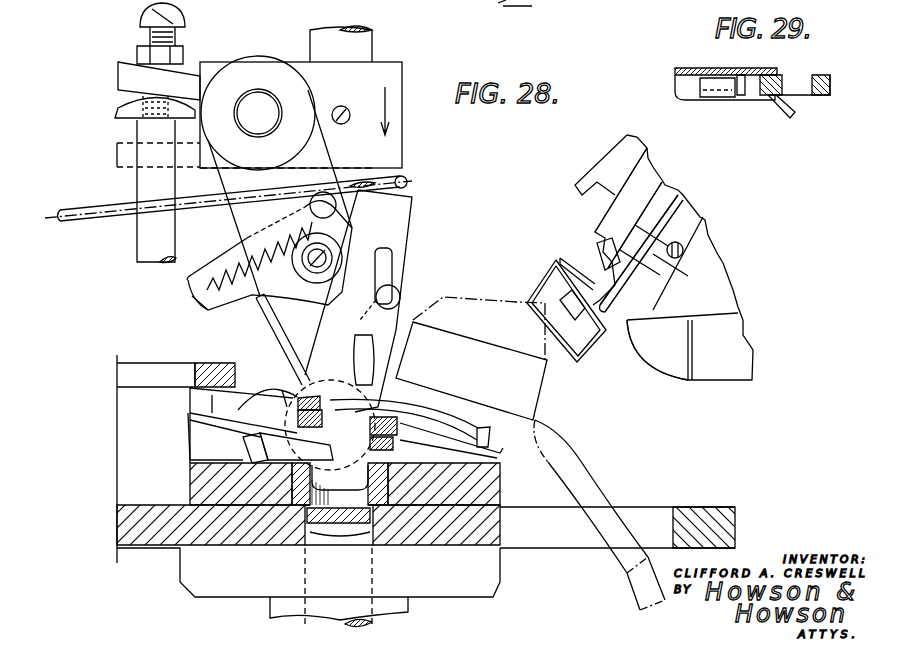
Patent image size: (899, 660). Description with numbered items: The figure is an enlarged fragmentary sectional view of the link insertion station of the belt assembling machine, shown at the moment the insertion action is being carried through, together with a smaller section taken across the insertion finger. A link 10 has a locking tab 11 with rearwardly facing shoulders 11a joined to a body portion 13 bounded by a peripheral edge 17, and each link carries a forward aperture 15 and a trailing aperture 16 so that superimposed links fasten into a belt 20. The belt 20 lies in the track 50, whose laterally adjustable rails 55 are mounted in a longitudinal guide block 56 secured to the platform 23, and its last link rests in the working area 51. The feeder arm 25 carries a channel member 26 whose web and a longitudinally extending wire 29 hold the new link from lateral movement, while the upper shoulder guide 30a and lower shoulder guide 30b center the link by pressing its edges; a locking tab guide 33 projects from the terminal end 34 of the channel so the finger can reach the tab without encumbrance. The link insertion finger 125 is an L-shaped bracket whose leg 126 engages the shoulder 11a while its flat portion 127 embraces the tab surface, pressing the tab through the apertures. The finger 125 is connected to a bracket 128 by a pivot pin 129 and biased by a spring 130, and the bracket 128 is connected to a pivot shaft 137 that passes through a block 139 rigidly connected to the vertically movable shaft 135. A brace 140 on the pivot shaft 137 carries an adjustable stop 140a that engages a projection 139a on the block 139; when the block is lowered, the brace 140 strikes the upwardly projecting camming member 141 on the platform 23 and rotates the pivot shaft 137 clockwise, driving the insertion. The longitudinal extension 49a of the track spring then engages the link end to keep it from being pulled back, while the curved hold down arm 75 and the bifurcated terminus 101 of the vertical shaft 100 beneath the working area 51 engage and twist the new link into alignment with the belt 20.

In FIG. 28, the link 10 is at (245, 400).
In FIG. 29, the link 10 is at (812, 75).
In FIG. 28, the locking tab 11 is at (243, 456).
In FIG. 28, the rearwardly facing shoulders 11a is at (318, 460).
In FIG. 28, the body portion 13 is at (400, 212).
In FIG. 29, the body portion 13 is at (780, 108).
In FIG. 28, the forward aperture 15 is at (377, 345).
In FIG. 28, the trailing aperture 16 is at (384, 272).
In FIG. 29, the trailing aperture 16 is at (805, 96).
In FIG. 28, the peripheral edge 17 is at (413, 298).
In FIG. 28, the belt 20 is at (217, 402).
In FIG. 28, the platform 23 is at (712, 510).
In FIG. 28, the feeder arm 25 is at (492, 293).
In FIG. 28, the channel member 26 is at (652, 178).
In FIG. 28, the wire 29 is at (670, 208).
In FIG. 28, the upper shoulder guide 30a is at (593, 152).
In FIG. 28, the lower shoulder guide 30b is at (703, 260).
In FIG. 28, the locking tab guide 33 is at (550, 268).
In FIG. 28, the terminal end 34 is at (598, 243).
In FIG. 28, the longitudinal extension 49a is at (426, 180).
In FIG. 28, the track 50 is at (152, 369).
In FIG. 28, the working area 51 is at (414, 412).
In FIG. 28, the rails 55 is at (489, 432).
In FIG. 28, the guide block 56 is at (125, 444).
In FIG. 28, the hold down arm 75 is at (590, 463).
In FIG. 28, the shaft 100 is at (372, 625).
In FIG. 28, the bifurcated terminus 101 is at (350, 500).
In FIG. 28, the link insertion finger 125 is at (278, 306).
In FIG. 29, the link insertion finger 125 is at (729, 71).
In FIG. 28, the leg 126 is at (322, 440).
In FIG. 29, the leg 126 is at (675, 84).
In FIG. 28, the flat portion 127 is at (240, 254).
In FIG. 29, the flat portion 127 is at (692, 70).
In FIG. 28, the bracket 128 is at (350, 160).
In FIG. 28, the pivot pin 129 is at (310, 253).
In FIG. 28, the spring 130 is at (212, 276).
In FIG. 28, the shaft 135 is at (372, 44).
In FIG. 28, the pivot shaft 137 is at (258, 74).
In FIG. 28, the block 139 is at (412, 80).
In FIG. 28, the projection 139a is at (117, 155).
In FIG. 28, the brace 140 is at (118, 78).
In FIG. 28, the adjustable stop 140a is at (180, 20).
In FIG. 28, the camming member 141 is at (137, 246).